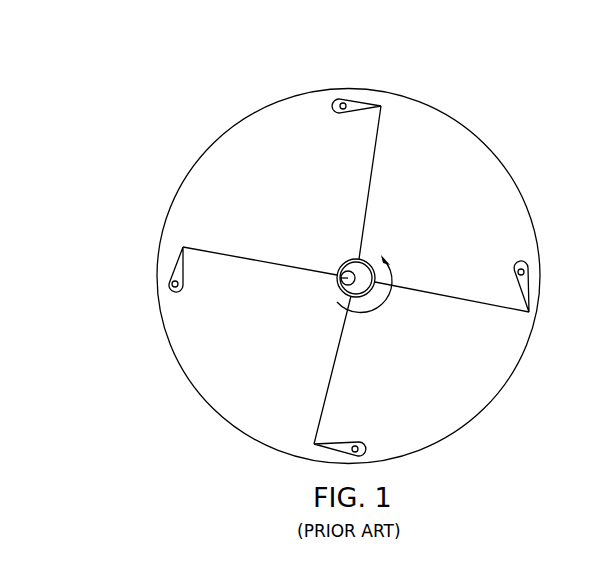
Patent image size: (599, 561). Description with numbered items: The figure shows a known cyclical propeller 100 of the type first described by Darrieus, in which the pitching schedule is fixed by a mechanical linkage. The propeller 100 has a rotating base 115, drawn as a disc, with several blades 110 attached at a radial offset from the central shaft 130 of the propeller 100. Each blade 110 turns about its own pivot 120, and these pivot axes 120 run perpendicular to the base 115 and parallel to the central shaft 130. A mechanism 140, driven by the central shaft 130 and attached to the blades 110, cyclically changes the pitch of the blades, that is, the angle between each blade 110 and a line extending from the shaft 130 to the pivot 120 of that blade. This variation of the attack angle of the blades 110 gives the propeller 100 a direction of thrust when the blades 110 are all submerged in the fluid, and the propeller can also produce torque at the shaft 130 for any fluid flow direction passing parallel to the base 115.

The propeller 100 is at (96, 111).
The blades 110 is at (172, 260).
The base 115 is at (426, 380).
The pivot axes 120 is at (172, 284).
The central shaft 130 is at (340, 278).
The mechanism 140 is at (345, 262).